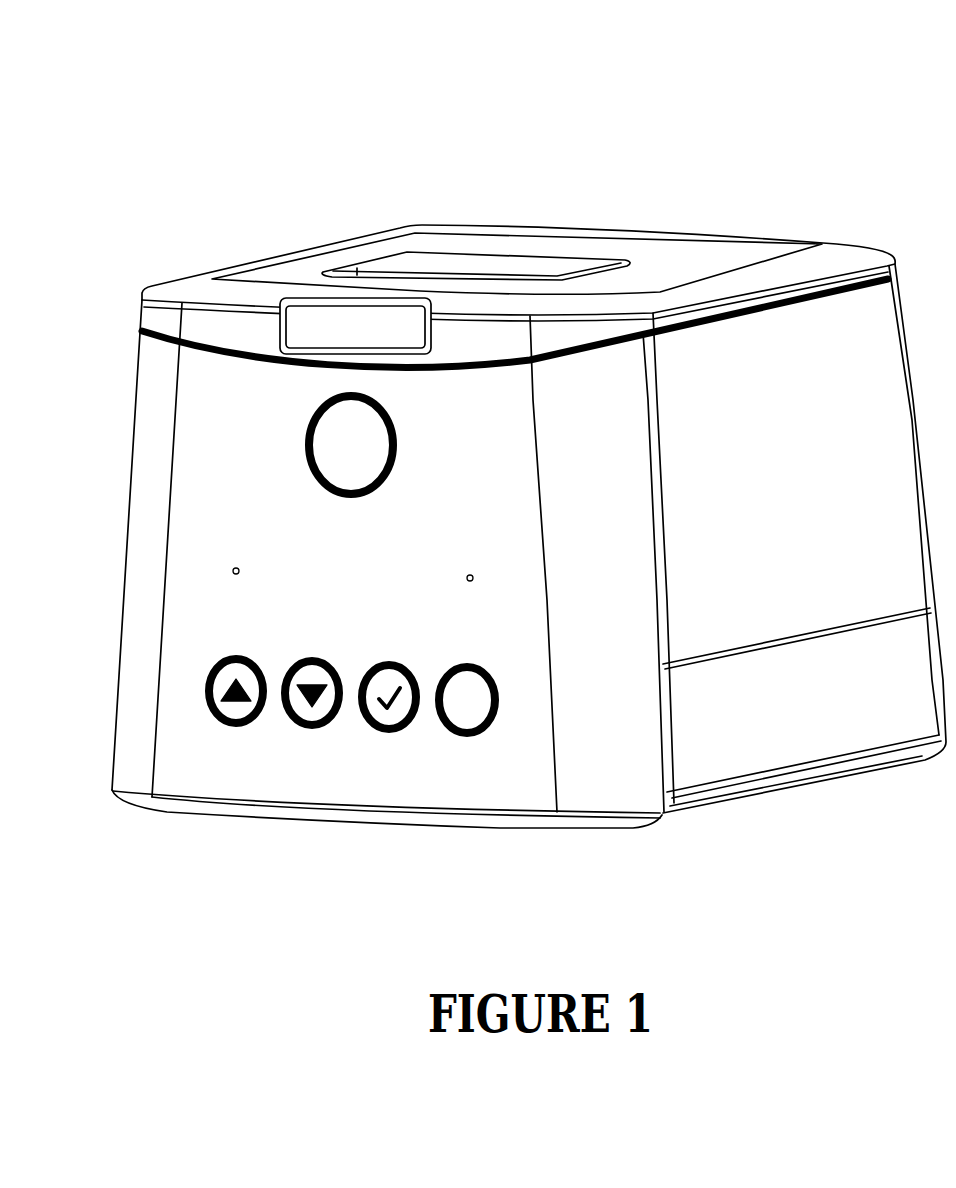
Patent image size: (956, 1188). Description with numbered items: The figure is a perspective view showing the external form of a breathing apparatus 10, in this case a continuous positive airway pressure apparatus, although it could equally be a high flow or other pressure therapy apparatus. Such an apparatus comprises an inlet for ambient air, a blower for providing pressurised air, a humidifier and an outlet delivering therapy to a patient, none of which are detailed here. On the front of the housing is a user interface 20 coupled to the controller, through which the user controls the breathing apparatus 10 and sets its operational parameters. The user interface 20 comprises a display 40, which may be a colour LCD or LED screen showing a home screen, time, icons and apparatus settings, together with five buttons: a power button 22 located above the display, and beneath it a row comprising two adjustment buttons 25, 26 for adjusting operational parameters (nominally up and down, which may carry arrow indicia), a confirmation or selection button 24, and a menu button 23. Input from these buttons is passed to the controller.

The breathing apparatus 10 is at (724, 166).
The user interface 20 is at (522, 680).
The power button 22 is at (305, 462).
The menu button 23 is at (457, 735).
The confirmation button 24 is at (368, 728).
The adjustment button 25 is at (214, 718).
The adjustment button 26 is at (291, 722).
The display 40 is at (247, 593).